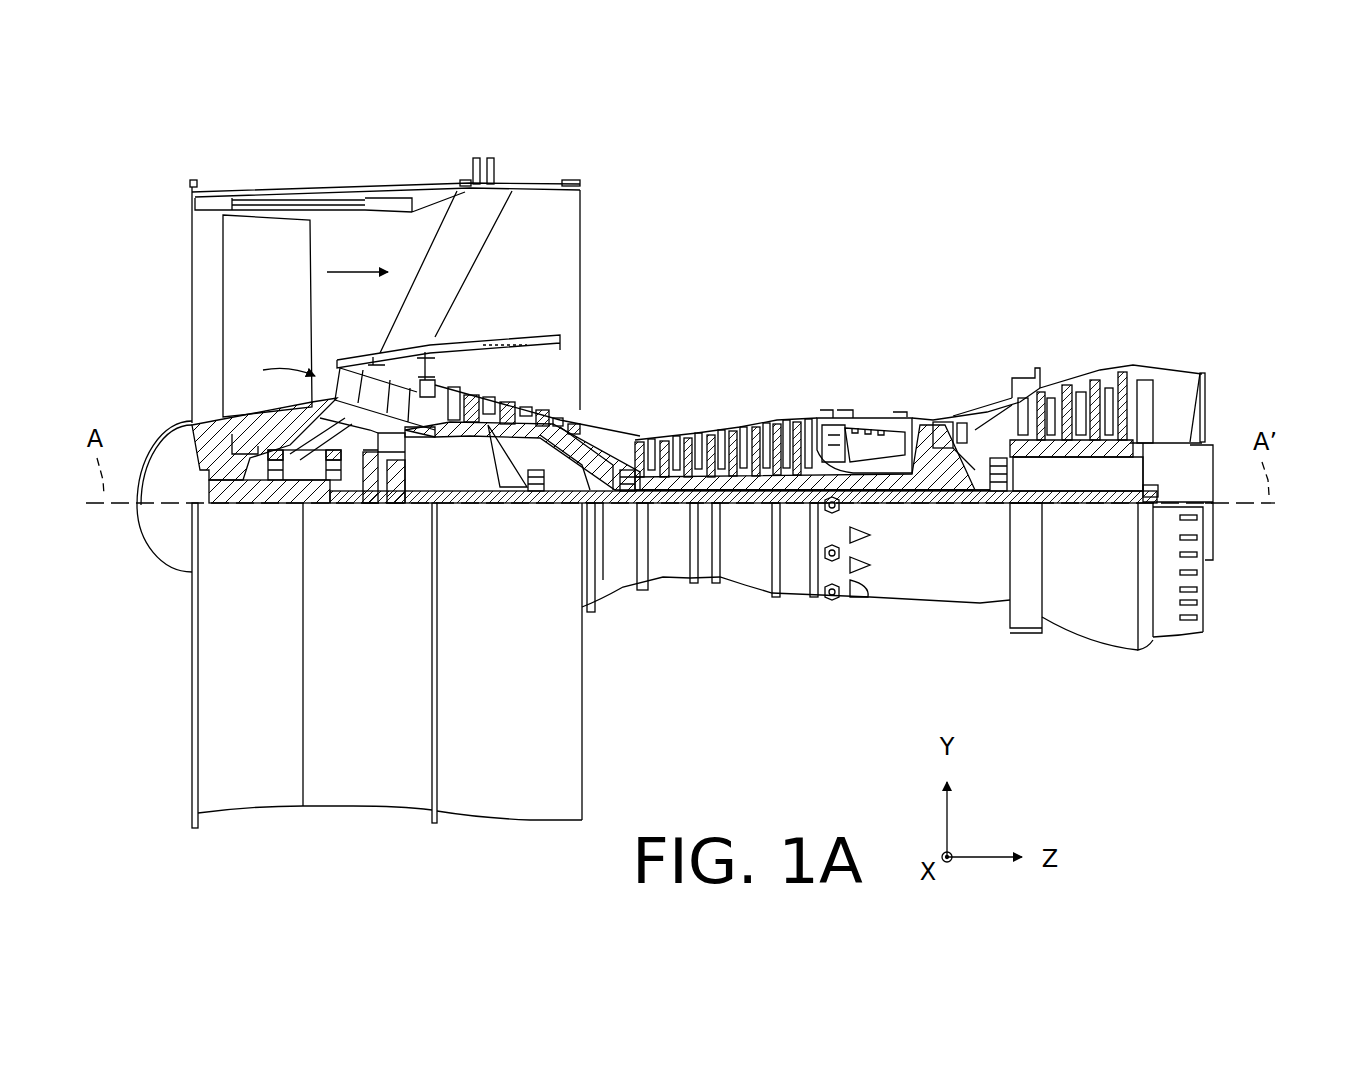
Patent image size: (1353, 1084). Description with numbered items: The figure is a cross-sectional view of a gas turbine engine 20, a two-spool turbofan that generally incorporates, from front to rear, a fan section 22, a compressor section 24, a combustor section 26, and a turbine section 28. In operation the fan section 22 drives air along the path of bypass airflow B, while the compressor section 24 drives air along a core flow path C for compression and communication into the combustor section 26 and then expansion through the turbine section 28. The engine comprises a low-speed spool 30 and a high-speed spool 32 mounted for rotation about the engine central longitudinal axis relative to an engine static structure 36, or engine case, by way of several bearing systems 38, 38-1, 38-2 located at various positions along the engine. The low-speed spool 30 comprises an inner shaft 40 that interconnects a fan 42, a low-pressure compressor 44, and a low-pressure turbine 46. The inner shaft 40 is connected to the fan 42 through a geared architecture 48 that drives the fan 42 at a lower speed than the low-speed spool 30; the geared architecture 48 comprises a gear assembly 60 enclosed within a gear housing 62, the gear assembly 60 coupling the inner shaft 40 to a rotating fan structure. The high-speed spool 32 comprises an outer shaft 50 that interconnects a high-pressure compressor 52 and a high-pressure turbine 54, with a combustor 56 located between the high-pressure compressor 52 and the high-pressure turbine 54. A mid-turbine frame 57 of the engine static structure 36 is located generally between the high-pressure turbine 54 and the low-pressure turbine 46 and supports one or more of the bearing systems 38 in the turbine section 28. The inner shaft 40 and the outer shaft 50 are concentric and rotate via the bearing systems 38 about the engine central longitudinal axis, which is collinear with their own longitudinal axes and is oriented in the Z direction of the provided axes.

The gas turbine engine 20 is at (930, 214).
The fan section 22 is at (432, 167).
The compressor section 24 is at (440, 300).
The combustor section 26 is at (818, 300).
The turbine section 28 is at (1142, 300).
The low-speed spool 30 is at (750, 520).
The high-speed spool 32 is at (790, 472).
The engine static structure 36 is at (168, 816).
The bearing system 38 is at (1000, 496).
The bearing system 38-1 is at (279, 482).
The bearing system 38-2 is at (540, 507).
The inner shaft 40 is at (603, 505).
The fan 42 is at (290, 316).
The low-pressure compressor 44 is at (512, 400).
The low-pressure turbine 46 is at (1079, 388).
The geared architecture 48 is at (403, 532).
The outer shaft 50 is at (866, 490).
The high-pressure compressor 52 is at (733, 472).
The high-pressure turbine 54 is at (943, 420).
The combustor 56 is at (867, 438).
The mid-turbine frame 57 is at (984, 408).
The gear assembly 60 is at (404, 485).
The gear housing 62 is at (404, 458).
The bypass airflow B is at (357, 276).
The core flow path C is at (279, 372).